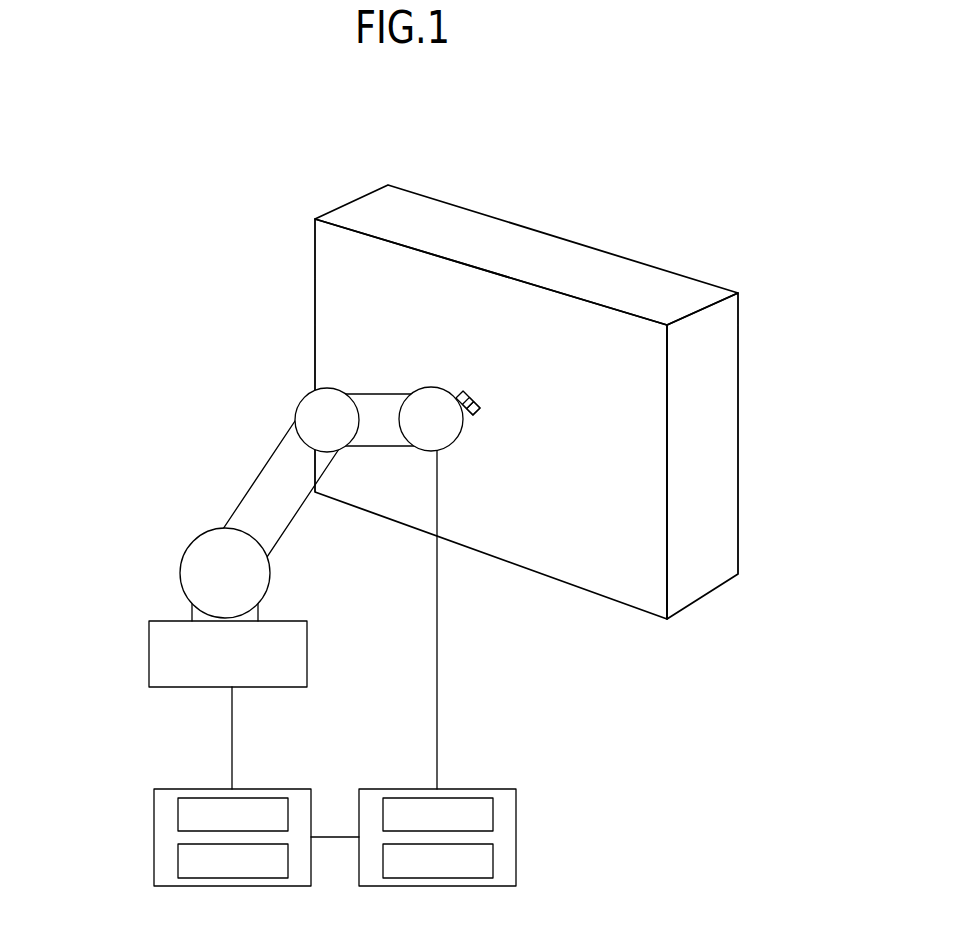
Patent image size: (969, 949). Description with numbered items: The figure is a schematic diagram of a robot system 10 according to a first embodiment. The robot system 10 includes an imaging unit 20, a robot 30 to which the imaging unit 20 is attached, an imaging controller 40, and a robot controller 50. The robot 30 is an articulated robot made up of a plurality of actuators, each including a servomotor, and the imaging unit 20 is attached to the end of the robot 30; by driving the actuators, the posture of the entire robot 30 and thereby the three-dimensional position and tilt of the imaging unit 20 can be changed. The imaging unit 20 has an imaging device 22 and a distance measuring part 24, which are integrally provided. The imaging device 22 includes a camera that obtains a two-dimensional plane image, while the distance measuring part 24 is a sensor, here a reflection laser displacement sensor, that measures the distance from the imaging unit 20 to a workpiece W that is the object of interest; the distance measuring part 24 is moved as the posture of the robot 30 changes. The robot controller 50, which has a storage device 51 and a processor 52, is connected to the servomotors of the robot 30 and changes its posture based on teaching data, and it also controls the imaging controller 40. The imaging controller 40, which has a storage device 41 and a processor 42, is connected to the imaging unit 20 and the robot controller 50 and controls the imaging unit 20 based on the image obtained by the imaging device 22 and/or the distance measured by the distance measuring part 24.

The robot system 10 is at (648, 148).
The workpiece W is at (728, 378).
The robot 30 is at (245, 443).
The imaging unit 20 is at (462, 394).
The imaging device 22 is at (472, 392).
The distance measuring part 24 is at (478, 409).
The imaging controller 40 is at (516, 837).
The storage device 41 is at (493, 813).
The processor 42 is at (493, 862).
The robot controller 50 is at (154, 840).
The storage device 51 is at (178, 815).
The processor 52 is at (178, 863).